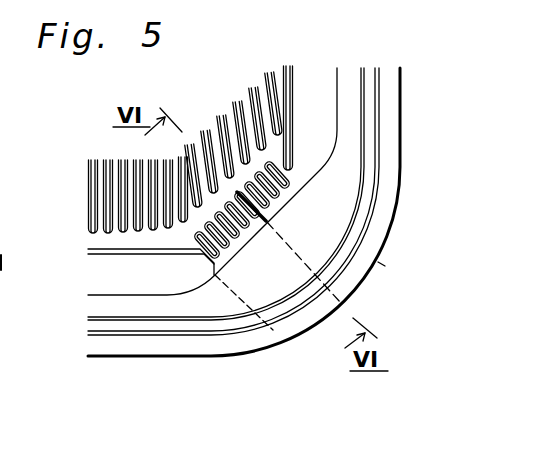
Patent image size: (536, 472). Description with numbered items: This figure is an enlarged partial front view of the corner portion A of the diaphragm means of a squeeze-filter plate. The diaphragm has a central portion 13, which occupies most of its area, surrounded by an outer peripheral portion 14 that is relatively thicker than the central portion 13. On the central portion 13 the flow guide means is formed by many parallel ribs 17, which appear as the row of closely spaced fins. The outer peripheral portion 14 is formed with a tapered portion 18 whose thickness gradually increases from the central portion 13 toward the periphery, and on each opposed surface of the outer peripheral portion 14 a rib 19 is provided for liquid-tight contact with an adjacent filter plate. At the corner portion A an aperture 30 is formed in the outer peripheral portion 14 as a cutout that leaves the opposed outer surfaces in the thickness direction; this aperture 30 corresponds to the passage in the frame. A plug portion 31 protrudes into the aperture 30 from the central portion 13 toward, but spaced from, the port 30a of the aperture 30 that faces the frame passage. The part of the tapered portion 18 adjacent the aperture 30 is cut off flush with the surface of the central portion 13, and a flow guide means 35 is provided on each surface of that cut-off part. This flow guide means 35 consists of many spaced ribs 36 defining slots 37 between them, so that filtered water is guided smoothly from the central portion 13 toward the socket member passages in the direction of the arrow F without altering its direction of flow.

The central portion 13 is at (100, 243).
The outer peripheral portion 14 is at (352, 117).
The parallel ribs 17 is at (287, 84).
The tapered portion 18 is at (113, 282).
The rib 19 is at (368, 155).
The aperture 30 is at (273, 330).
The port 30a is at (304, 336).
The plug portion 31 is at (313, 183).
The flow guide means 35 is at (215, 276).
The ribs 36 is at (266, 169).
The slots 37 is at (275, 187).
The arrow F is at (242, 210).
The portion A is at (378, 262).